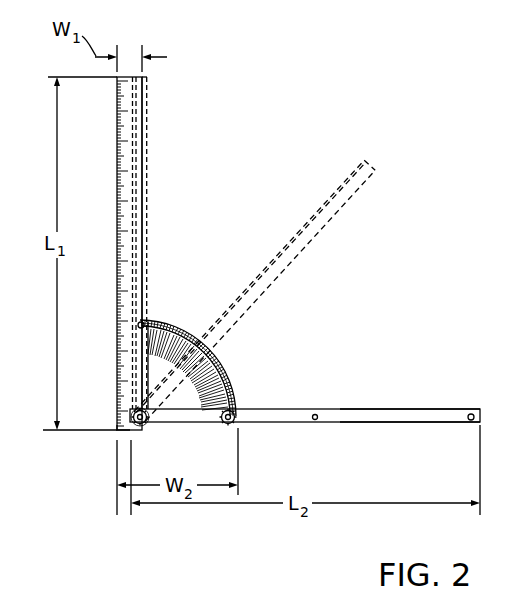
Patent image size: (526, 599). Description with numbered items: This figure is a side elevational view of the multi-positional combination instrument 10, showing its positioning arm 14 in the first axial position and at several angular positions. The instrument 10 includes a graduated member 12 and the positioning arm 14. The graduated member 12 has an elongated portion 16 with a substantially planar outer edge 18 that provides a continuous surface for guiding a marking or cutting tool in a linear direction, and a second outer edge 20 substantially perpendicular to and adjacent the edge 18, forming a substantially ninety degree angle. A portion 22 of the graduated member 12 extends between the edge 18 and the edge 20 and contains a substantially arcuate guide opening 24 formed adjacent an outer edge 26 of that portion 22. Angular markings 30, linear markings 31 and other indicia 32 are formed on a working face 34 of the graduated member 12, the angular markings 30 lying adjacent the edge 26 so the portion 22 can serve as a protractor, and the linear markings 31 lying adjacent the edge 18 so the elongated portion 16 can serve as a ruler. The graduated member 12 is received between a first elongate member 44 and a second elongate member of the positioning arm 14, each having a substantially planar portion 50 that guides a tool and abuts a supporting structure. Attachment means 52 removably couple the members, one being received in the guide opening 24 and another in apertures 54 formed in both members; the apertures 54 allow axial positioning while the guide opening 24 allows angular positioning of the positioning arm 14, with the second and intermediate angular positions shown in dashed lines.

The multi-positional combination instrument 10 is at (53, 55).
The graduated member 12 is at (113, 105).
The positioning arm 14 is at (147, 100).
The elongated portion 16 is at (142, 146).
The outer edge 18 is at (116, 222).
The second outer edge 20 is at (118, 431).
The portion 22 is at (181, 314).
The guide opening 24 is at (218, 350).
The outer edge 26 is at (232, 375).
The angular markings 30 is at (153, 318).
The linear markings 31 is at (116, 242).
The indicia 32 is at (178, 396).
The working face 34 is at (116, 268).
The first elongate member 44 is at (418, 421).
The planar portion 50 is at (384, 408).
The attachment means 52 is at (140, 426).
The aperture 54 is at (316, 414).